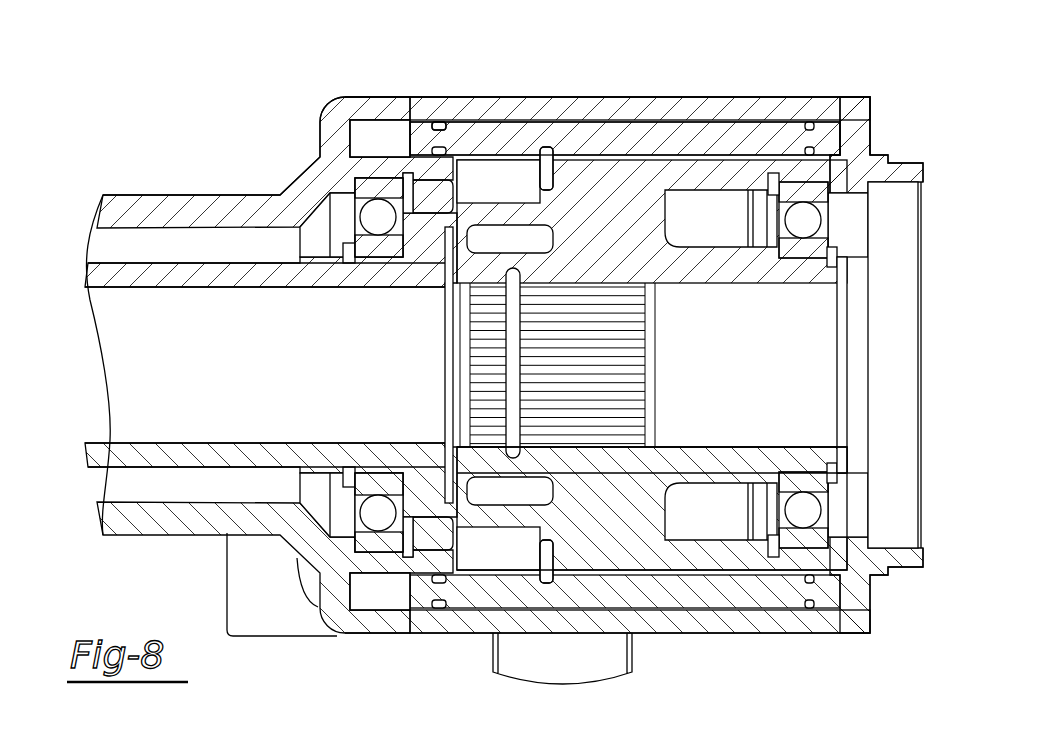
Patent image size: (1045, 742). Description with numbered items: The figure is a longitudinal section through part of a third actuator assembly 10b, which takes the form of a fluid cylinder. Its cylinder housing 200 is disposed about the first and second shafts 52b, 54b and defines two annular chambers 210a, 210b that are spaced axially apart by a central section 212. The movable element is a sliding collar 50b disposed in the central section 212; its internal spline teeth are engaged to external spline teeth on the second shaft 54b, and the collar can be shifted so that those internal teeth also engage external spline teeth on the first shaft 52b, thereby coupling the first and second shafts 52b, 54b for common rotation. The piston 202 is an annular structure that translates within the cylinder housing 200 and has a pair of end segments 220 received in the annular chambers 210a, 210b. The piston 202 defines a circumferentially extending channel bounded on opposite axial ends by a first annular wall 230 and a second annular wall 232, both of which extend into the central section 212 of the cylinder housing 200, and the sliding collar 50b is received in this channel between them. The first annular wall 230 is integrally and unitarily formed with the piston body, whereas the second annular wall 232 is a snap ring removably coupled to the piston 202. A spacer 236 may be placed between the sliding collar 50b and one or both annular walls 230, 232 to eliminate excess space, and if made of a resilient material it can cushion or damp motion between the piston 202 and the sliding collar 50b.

The actuator assembly 10b is at (236, 114).
The cylinder housing 200 is at (604, 98).
The piston 202 is at (497, 140).
The annular chamber 210a is at (367, 133).
The annular chamber 210b is at (826, 122).
The central section 212 is at (477, 555).
The end segments 220 is at (438, 124).
The first annular wall 230 is at (673, 558).
The second annular wall 232 is at (546, 567).
The spacer 236 is at (549, 150).
The sliding collar 50b is at (600, 552).
The first shaft 52b is at (124, 274).
The second shaft 54b is at (736, 470).